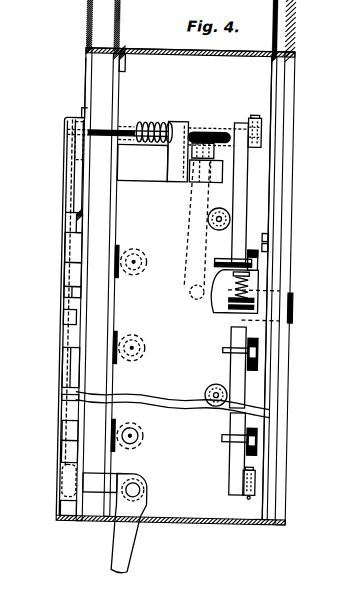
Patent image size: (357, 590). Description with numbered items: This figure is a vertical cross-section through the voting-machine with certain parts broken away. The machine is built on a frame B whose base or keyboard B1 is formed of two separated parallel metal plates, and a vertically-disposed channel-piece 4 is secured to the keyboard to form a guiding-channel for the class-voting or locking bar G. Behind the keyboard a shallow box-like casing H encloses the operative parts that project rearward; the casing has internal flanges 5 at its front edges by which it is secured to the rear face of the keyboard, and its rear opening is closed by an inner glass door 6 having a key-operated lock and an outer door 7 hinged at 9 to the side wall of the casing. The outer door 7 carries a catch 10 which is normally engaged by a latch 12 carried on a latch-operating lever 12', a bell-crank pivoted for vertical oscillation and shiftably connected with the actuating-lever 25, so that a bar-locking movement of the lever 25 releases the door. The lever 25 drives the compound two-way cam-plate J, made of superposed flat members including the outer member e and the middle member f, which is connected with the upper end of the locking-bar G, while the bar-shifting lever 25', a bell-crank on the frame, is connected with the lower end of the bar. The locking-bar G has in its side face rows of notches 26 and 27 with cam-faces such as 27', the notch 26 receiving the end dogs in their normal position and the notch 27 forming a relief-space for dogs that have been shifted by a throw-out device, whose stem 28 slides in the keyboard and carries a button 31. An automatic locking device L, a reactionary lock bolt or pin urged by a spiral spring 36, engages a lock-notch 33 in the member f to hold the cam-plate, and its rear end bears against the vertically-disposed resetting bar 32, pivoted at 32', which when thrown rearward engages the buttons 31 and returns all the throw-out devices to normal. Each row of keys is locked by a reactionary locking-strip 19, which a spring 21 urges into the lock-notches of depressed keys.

The frame B is at (110, 44).
The base or keyboard B1 is at (82, 86).
The internal flanges 5 is at (121, 70).
The casing H is at (195, 84).
The locking device L is at (183, 139).
The cam-plate J is at (69, 164).
The outer member of cam-plate e is at (62, 181).
The middle member of cam-plate f is at (73, 194).
The hinge 9 is at (80, 202).
The spiral spring 36 is at (146, 126).
The actuating-lever 25 is at (142, 171).
The lock-notch 33 is at (213, 134).
The pivot of resetting bar 32' is at (290, 123).
The resetting bar 32 is at (273, 197).
The outer door 7 is at (282, 212).
The inner door 6 is at (272, 227).
The latch-operating lever 12' is at (197, 224).
The latch 12 is at (234, 346).
The catch 10 is at (262, 291).
The locking-strip 19 is at (117, 248).
The spring 21 is at (146, 263).
The notch 27 is at (54, 247).
The cam-face 27' is at (52, 273).
The locking bar G is at (72, 302).
The notch 26 is at (74, 414).
The vertical channel-piece 4 is at (61, 425).
The button 31 is at (256, 351).
The stem 28 is at (228, 437).
The bar-shifting lever 25' is at (127, 523).